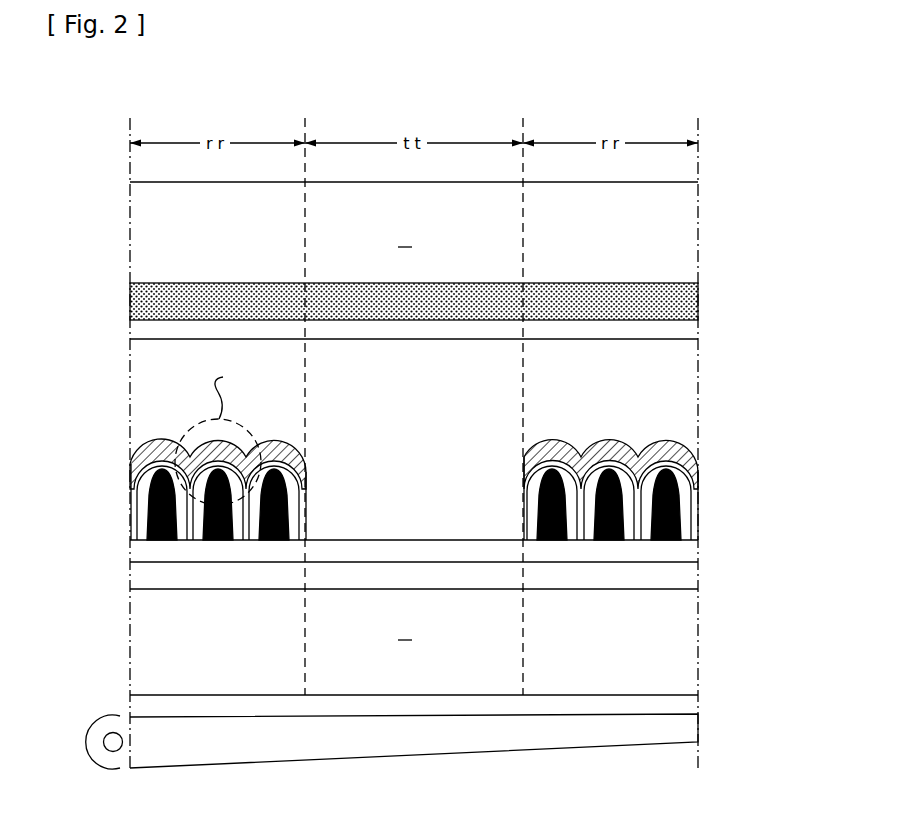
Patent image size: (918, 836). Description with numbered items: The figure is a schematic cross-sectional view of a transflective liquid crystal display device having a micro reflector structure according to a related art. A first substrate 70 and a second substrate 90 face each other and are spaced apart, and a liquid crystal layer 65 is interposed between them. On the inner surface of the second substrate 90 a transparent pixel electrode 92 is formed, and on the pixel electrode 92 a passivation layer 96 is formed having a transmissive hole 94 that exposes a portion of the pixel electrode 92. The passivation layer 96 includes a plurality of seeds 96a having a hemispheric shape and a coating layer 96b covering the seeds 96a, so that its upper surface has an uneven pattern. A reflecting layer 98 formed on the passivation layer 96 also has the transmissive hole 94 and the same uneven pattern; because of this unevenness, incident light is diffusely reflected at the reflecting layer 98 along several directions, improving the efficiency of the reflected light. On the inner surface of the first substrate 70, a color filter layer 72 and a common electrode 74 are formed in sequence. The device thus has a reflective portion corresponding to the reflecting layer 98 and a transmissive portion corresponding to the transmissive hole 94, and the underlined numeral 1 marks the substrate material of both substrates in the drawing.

The substrate material 1 is at (405, 434).
The first substrate 70 is at (130, 182).
The color filter layer 72 is at (683, 301).
The common electrode 74 is at (684, 329).
The liquid crystal layer 65 is at (130, 340).
The second substrate 90 is at (130, 540).
The transparent pixel electrode 92 is at (690, 551).
The transmissive hole 94 is at (410, 503).
The passivation layer 96 is at (482, 498).
The seeds 96a is at (681, 488).
The coating layer 96b is at (694, 518).
The reflecting layer 98 is at (157, 441).